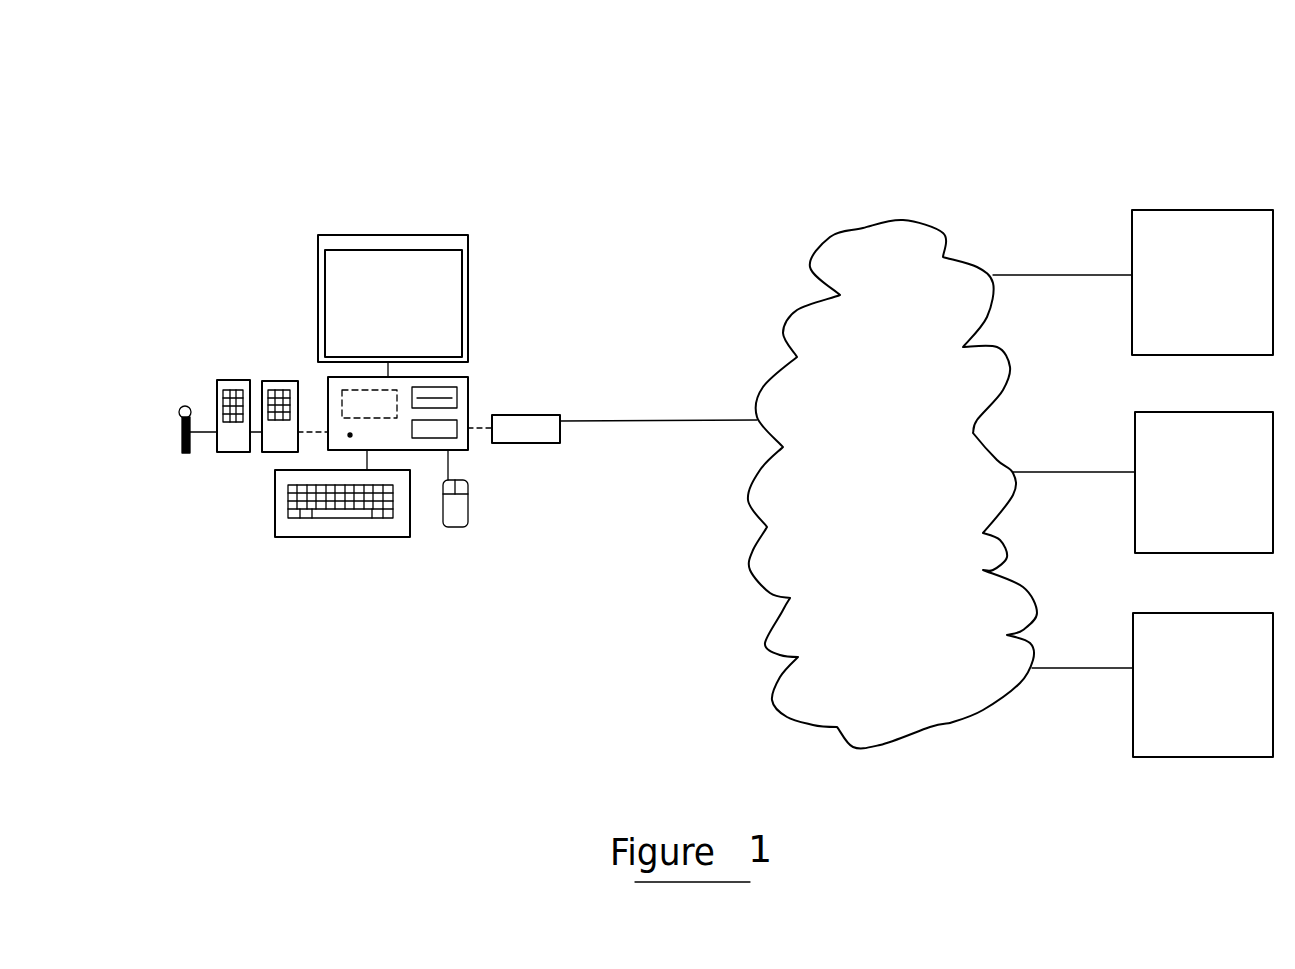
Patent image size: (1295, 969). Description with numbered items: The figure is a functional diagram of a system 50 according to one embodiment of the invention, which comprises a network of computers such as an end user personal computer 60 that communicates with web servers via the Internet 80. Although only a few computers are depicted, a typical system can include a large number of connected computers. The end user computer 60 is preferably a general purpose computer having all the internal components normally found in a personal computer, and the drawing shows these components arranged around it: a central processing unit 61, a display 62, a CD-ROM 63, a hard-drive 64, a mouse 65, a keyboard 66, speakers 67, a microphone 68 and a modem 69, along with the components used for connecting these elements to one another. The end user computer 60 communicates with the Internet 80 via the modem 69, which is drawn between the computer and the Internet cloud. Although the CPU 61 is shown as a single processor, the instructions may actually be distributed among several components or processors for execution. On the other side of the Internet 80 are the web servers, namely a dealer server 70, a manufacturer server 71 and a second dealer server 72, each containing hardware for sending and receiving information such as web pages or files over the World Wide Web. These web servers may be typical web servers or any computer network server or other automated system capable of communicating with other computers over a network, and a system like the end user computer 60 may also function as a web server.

The system 50 is at (745, 92).
The end user personal computer 60 is at (430, 210).
The central processing unit 61 is at (342, 393).
The display 62 is at (470, 270).
The CD-ROM 63 is at (460, 395).
The hard-drive 64 is at (462, 433).
The mouse 65 is at (470, 513).
The keyboard 66 is at (338, 540).
The speakers 67 is at (257, 362).
The microphone 68 is at (177, 447).
The modem 69 is at (553, 412).
The dealer server 70 is at (1202, 282).
The manufacturer server 71 is at (1204, 482).
The dealer server 72 is at (1203, 685).
The Internet 80 is at (877, 515).